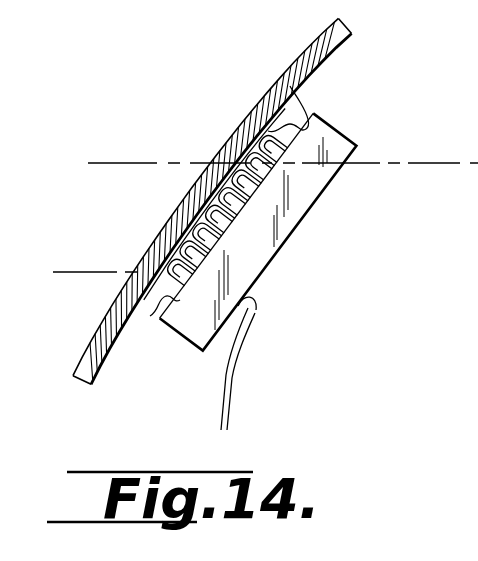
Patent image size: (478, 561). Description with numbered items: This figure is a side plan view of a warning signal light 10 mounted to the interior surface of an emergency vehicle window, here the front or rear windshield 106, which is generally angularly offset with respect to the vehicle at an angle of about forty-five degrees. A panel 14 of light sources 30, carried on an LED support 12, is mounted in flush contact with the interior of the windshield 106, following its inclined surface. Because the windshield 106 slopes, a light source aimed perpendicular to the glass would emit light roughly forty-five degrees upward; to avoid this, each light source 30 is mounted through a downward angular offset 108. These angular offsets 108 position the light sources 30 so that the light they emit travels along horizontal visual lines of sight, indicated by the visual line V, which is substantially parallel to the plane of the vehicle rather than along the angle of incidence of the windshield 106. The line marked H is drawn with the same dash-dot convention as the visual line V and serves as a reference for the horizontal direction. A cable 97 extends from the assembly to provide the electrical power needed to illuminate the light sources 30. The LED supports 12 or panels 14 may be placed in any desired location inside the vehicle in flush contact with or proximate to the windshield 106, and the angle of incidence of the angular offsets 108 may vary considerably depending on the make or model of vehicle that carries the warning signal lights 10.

The warning signal light 10 is at (362, 117).
The LED support 12 is at (206, 257).
The panel 14 is at (187, 353).
The light source 30 is at (188, 201).
The cable 97 is at (234, 364).
The front or rear windshield 106 is at (85, 350).
The angular offset 108 is at (248, 182).
The horizontal axis H is at (443, 161).
The horizontal visual line V is at (102, 271).